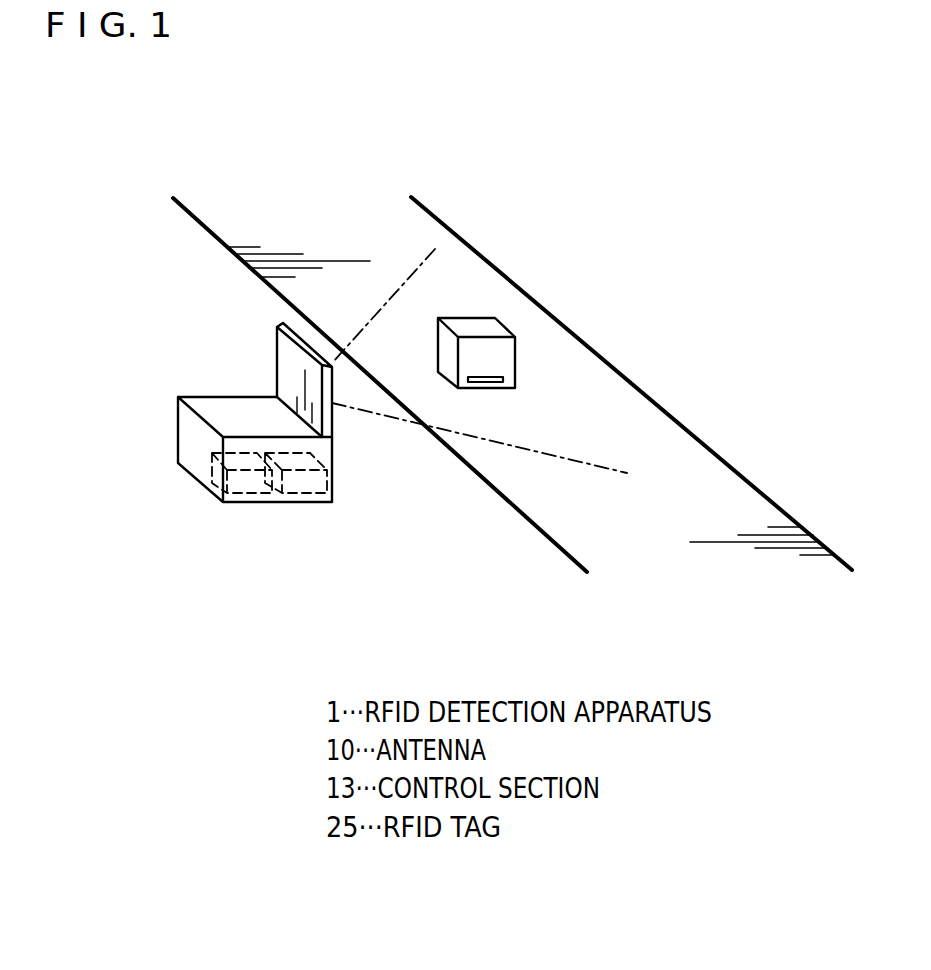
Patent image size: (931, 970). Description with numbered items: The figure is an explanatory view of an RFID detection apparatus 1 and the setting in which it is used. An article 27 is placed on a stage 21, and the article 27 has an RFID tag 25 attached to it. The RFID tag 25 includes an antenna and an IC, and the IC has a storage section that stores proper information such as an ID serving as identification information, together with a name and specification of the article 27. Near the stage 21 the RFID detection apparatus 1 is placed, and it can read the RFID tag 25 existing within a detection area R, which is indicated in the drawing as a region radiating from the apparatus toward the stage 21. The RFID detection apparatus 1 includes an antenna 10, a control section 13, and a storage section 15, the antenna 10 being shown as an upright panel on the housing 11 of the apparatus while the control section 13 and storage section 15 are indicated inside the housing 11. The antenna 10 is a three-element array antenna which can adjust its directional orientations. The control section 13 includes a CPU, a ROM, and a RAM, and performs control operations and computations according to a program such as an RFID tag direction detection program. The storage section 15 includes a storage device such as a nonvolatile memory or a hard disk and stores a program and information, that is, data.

The RFID detection apparatus 1 is at (145, 383).
The antenna 10 is at (278, 353).
The housing 11 is at (188, 438).
The control section 13 is at (210, 470).
The storage section 15 is at (300, 495).
The stage 21 is at (532, 497).
The RFID tag 25 is at (498, 375).
The article 27 is at (510, 325).
The detection area R is at (467, 435).